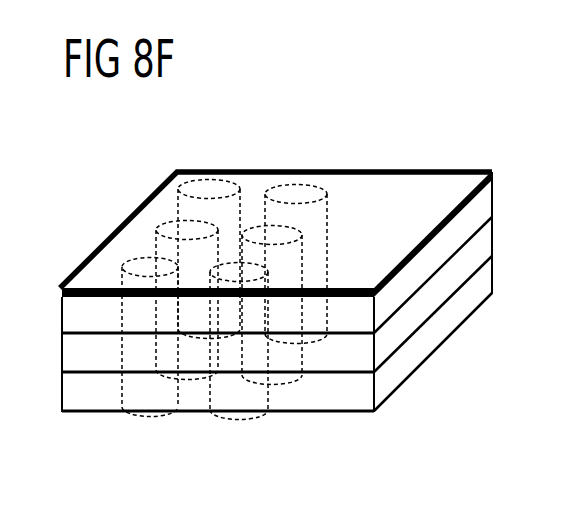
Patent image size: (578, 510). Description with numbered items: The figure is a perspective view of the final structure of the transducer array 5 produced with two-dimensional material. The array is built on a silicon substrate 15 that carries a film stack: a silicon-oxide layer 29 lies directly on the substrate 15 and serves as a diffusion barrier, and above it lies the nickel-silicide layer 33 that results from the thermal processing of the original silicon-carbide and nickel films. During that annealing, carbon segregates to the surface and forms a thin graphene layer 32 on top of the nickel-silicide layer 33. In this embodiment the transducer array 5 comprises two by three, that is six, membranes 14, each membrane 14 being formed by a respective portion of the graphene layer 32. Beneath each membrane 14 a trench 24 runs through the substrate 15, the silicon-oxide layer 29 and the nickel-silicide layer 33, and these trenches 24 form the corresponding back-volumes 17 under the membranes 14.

The transducer array 5 is at (300, 273).
The membrane 14 is at (224, 306).
The substrate 15 is at (437, 335).
The back-volume 17 is at (195, 371).
The trench 24 is at (242, 413).
The silicon-oxide layer 29 is at (487, 240).
The graphene layer 32 is at (118, 231).
The nickel-silicide layer 33 is at (300, 228).